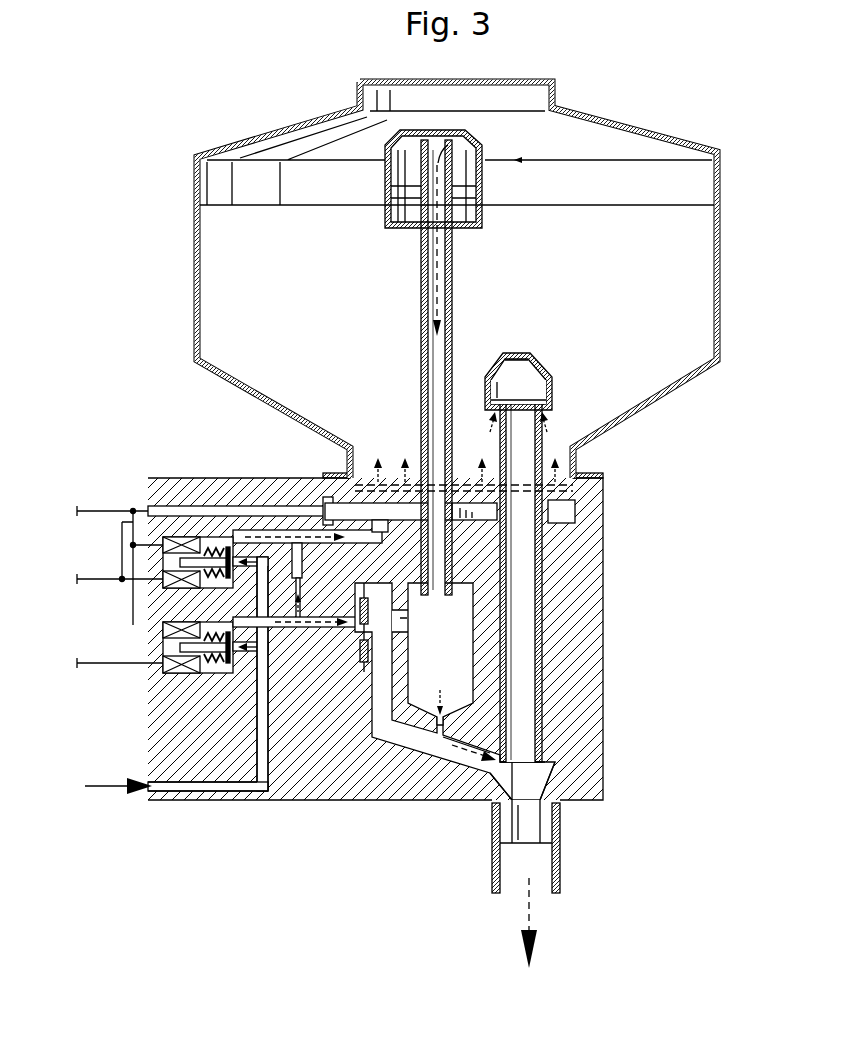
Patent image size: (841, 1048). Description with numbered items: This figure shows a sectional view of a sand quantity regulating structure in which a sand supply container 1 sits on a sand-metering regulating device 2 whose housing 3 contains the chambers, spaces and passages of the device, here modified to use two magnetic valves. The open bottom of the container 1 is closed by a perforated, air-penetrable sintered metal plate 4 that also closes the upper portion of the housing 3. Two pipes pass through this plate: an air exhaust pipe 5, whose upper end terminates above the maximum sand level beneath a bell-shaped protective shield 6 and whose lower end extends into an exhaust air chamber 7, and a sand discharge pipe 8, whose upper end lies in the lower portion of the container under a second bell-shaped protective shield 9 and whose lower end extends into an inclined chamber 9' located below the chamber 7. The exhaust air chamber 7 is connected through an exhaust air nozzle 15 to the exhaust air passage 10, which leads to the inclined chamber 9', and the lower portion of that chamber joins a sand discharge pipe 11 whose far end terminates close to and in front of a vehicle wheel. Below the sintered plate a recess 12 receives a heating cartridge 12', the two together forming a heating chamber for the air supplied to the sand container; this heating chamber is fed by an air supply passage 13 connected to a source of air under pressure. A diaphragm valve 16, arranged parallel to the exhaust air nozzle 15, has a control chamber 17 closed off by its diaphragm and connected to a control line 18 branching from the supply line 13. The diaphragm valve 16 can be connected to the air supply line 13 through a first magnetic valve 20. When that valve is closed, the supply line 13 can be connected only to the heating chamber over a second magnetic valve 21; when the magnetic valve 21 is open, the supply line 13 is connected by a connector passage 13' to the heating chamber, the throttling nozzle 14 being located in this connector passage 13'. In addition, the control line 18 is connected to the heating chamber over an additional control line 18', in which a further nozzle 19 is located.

The sand supply container 1 is at (668, 172).
The sand-metering regulating device 2 is at (632, 637).
The housing 3 is at (617, 683).
The sintered metal plate 4 is at (468, 482).
The air exhaust pipe 5 is at (420, 325).
The bell-shaped protective shield 6 is at (482, 140).
The exhaust air chamber 7 is at (440, 654).
The sand discharge pipe 8 is at (530, 586).
The bell-shaped protective shield 9 is at (529, 386).
The inclined chamber 9' is at (548, 798).
The exhaust air passage 10 is at (468, 762).
The sand discharge pipe 11 is at (548, 866).
The heating chamber recess 12 is at (483, 517).
The heating cartridge 12' is at (240, 477).
The air supply passage 13 is at (176, 700).
The connector passage 13' is at (215, 519).
The throttling nozzle 14 is at (277, 532).
The exhaust air nozzle 15 is at (432, 720).
The diaphragm valve 16 is at (362, 640).
The control chamber 17 is at (367, 670).
The control line 18 is at (296, 640).
The additional control line 18' is at (323, 598).
The throttling nozzle 19 is at (302, 578).
The first magnetic valve 20 is at (163, 625).
The second magnetic valve 21 is at (122, 538).